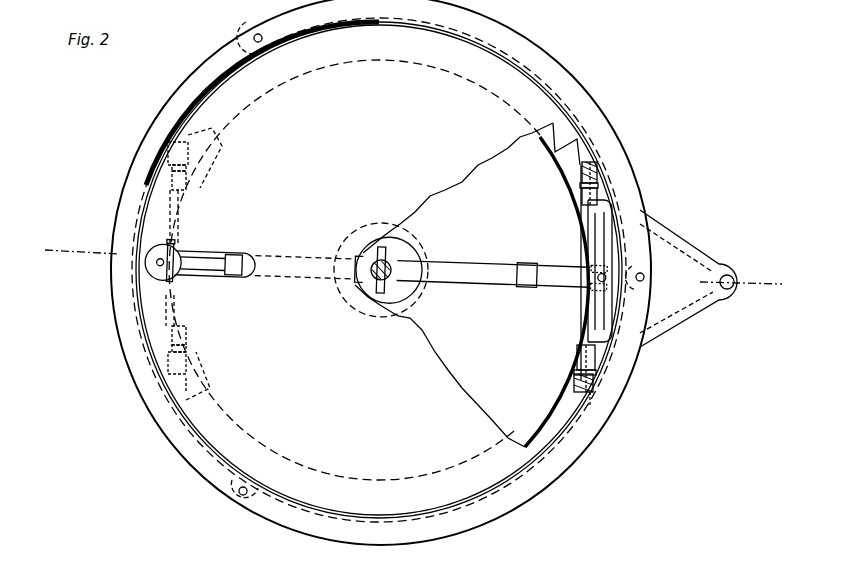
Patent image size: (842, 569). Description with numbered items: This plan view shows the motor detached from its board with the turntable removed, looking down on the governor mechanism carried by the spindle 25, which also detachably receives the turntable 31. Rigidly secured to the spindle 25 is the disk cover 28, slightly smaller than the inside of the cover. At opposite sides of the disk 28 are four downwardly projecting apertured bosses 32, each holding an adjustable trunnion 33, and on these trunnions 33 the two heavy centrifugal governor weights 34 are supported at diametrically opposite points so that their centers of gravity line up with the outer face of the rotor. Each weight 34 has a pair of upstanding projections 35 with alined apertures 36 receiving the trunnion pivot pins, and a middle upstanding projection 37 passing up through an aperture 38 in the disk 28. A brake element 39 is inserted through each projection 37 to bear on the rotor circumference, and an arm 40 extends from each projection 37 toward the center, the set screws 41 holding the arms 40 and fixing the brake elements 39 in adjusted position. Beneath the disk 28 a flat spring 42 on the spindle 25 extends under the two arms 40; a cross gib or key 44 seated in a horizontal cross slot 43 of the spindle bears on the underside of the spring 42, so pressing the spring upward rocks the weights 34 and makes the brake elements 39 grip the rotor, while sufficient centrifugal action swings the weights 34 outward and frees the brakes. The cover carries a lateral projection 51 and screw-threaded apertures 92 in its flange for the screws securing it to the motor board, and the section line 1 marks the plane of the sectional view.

The section line 1 is at (406, 258).
The spindle 25 is at (393, 260).
The disk cover 28 is at (354, 270).
The turntable 31 is at (580, 207).
The apertured bosses 32 is at (172, 168).
The adjustable trunnions 33 is at (180, 148).
The centrifugal governor weights 34 is at (592, 404).
The upstanding projections 35 is at (172, 186).
The alined apertures 36 is at (582, 338).
The upstanding projection 37 is at (175, 252).
The apertures 38 is at (230, 257).
The brake elements 39 is at (174, 279).
The arms 40 is at (215, 278).
The set screws 41 is at (156, 269).
The flat spring 42 is at (432, 262).
The horizontal cross slot 43 is at (390, 278).
The cross gib or key 44 is at (378, 295).
The lateral projection 51 is at (700, 262).
The screw-threaded apertures 92 is at (240, 494).